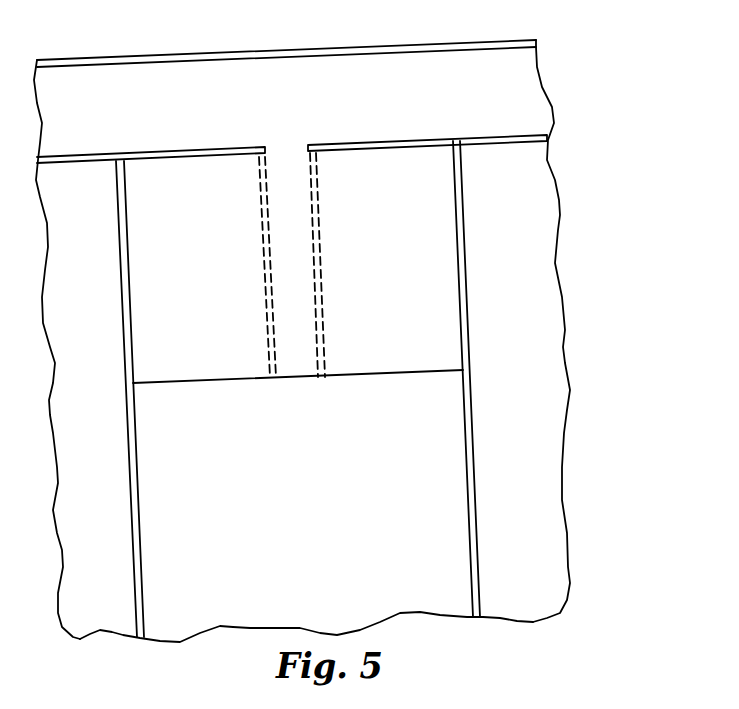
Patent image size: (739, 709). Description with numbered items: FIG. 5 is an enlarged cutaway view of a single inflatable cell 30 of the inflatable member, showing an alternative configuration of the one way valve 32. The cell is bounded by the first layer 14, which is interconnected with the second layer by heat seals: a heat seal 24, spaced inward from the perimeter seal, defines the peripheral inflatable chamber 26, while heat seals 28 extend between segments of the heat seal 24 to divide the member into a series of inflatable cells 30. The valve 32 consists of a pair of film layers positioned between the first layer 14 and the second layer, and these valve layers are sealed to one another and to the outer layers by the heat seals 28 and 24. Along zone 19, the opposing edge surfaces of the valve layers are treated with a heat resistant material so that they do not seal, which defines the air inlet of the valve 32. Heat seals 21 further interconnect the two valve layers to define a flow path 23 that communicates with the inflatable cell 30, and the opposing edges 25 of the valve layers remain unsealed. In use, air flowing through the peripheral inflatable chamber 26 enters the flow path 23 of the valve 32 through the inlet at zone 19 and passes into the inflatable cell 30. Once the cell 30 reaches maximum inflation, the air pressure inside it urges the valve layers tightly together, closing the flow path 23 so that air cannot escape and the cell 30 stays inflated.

The first layer 14 is at (530, 163).
The zone 19 is at (307, 136).
The heat seals 21 is at (263, 248).
The flow path 23 is at (305, 296).
The heat seal 24 is at (172, 152).
The opposing edges 25 is at (358, 375).
The peripheral inflatable chamber 26 is at (403, 62).
The heat seals 28 is at (124, 294).
The inflatable cell 30 is at (296, 526).
The one way valve 32 is at (447, 236).